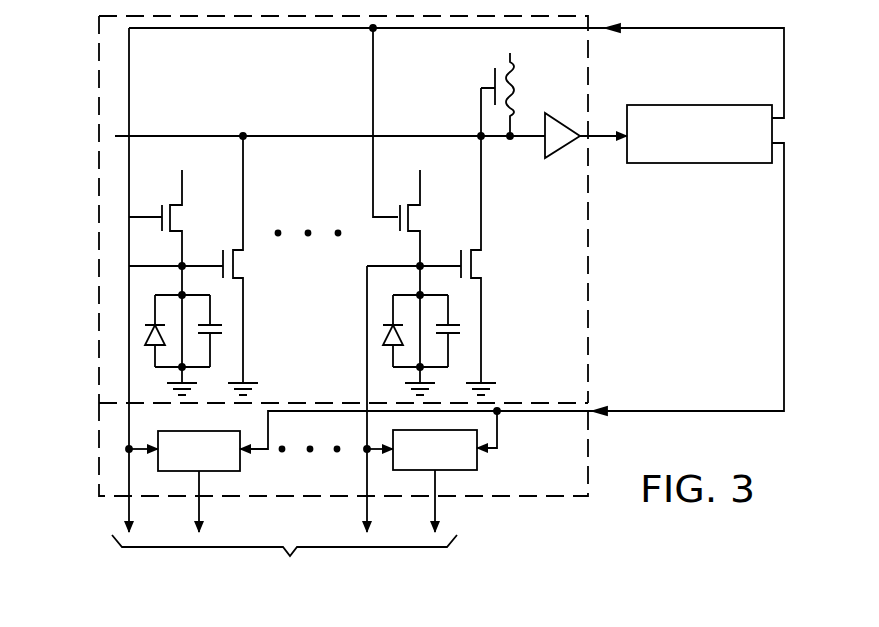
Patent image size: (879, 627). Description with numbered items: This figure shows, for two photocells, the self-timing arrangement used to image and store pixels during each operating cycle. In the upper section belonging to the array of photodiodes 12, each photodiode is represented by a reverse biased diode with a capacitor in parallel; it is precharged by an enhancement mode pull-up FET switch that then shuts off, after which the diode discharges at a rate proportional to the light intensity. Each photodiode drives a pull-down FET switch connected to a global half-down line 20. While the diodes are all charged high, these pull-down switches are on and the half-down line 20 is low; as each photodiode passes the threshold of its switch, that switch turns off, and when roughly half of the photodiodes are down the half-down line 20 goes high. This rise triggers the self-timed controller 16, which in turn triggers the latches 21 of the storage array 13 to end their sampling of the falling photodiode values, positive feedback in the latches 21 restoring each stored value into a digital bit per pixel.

The array of photodiodes 12 is at (107, 242).
The storage array 13 is at (109, 434).
The self-timed controller 16 is at (660, 164).
The half-down line 20 is at (186, 136).
The latches 21 is at (240, 461).